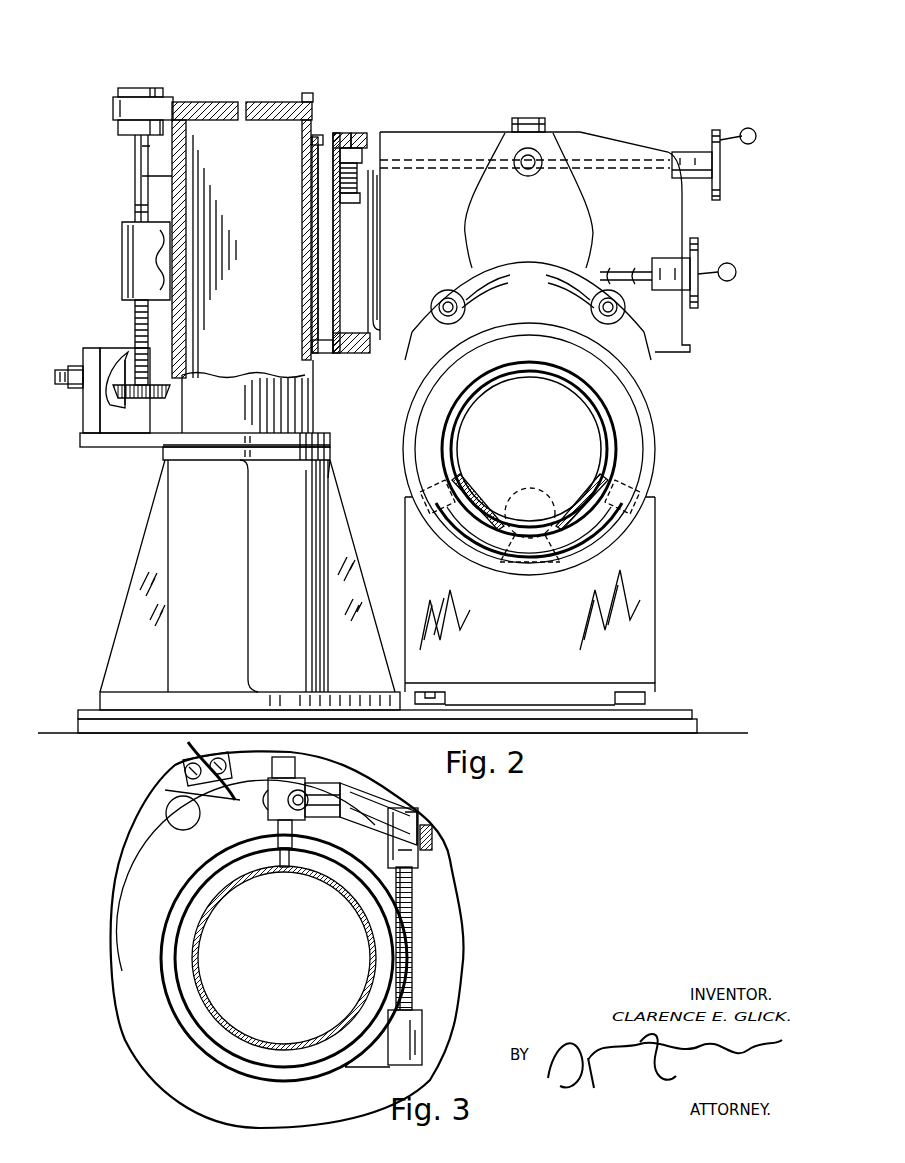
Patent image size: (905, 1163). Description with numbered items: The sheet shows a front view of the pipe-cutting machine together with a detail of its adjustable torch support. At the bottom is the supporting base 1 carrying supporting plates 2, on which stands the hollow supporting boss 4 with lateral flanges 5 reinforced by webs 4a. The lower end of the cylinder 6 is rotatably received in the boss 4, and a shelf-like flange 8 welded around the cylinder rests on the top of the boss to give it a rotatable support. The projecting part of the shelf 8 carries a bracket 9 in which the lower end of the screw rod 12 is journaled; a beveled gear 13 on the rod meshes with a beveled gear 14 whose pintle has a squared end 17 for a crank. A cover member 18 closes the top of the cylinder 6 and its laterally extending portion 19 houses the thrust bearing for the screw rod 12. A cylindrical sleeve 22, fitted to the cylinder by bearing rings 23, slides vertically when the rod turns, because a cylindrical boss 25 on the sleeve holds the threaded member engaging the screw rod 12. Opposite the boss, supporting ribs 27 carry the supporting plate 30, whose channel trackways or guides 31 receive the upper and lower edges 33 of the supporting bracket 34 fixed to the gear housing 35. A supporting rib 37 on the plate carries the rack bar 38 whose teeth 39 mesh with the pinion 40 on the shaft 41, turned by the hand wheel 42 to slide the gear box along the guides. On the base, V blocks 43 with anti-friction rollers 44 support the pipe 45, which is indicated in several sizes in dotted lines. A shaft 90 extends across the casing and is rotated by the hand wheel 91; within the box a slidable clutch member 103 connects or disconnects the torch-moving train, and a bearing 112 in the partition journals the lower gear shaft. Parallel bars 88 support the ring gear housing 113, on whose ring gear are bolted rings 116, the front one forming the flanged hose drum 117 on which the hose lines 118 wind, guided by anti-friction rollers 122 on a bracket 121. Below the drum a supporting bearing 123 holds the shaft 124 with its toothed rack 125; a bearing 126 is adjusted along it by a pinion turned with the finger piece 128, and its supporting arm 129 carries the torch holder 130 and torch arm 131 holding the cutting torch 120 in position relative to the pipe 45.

In FIG. 2, the supporting base 1 is at (695, 728).
In FIG. 2, the supporting plates 2 is at (85, 725).
In FIG. 2, the supporting boss 4 is at (300, 510).
In FIG. 2, the webs 4a is at (150, 540).
In FIG. 2, the lateral flanges 5 is at (135, 700).
In FIG. 2, the cylinder 6 is at (315, 417).
In FIG. 2, the shelf-like flange 8 is at (100, 442).
In FIG. 2, the bracket 9 is at (93, 358).
In FIG. 2, the screw rod 12 is at (135, 296).
In FIG. 2, the beveled gear 13 is at (138, 395).
In FIG. 2, the beveled gear 14 is at (110, 390).
In FIG. 2, the squared end 17 is at (60, 384).
In FIG. 2, the cover member 18 is at (200, 102).
In FIG. 2, the laterally extending portion 19 is at (113, 108).
In FIG. 2, the cylindrical sleeve 22 is at (142, 146).
In FIG. 2, the bearing rings 23 is at (142, 176).
In FIG. 2, the cylindrical boss 25 is at (125, 245).
In FIG. 2, the supporting ribs 27 is at (316, 130).
In FIG. 2, the supporting plate 30 is at (338, 250).
In FIG. 2, the trackways or guides 31 is at (340, 132).
In FIG. 2, the upper and lower edges 33 is at (362, 132).
In FIG. 2, the supporting bracket 34 is at (370, 278).
In FIG. 2, the gear housing 35 is at (598, 135).
In FIG. 2, the supporting rib 37 is at (356, 200).
In FIG. 2, the rack bar 38 is at (357, 180).
In FIG. 2, the teeth 39 is at (360, 160).
In FIG. 2, the pinion 40 is at (357, 152).
In FIG. 2, the shaft 41 is at (432, 138).
In FIG. 2, the hand wheel 42 is at (750, 128).
In FIG. 2, the V blocks 43 is at (640, 560).
In FIG. 2, the anti-friction rollers 44 is at (600, 490).
In FIG. 2, the pipe 45 is at (606, 440).
In FIG. 3, the pipe 45 is at (196, 950).
In FIG. 2, the parallel bars 88 is at (605, 308).
In FIG. 2, the shaft 90 is at (612, 270).
In FIG. 2, the hand wheel 91 is at (718, 268).
In FIG. 2, the slidable clutch member 103 is at (536, 158).
In FIG. 2, the bearing 112 is at (642, 352).
In FIG. 2, the ring gear housing 113 is at (641, 392).
In FIG. 3, the rings 116 is at (378, 890).
In FIG. 2, the flanged hose drum 117 is at (618, 410).
In FIG. 3, the flanged hose drum 117 is at (420, 903).
In FIG. 3, the hose lines 118 is at (185, 745).
In FIG. 3, the cutting torch 120 is at (290, 866).
In FIG. 3, the bracket 121 is at (166, 800).
In FIG. 3, the anti-friction rollers 122 is at (185, 772).
In FIG. 3, the supporting bearing 123 is at (410, 1037).
In FIG. 3, the shaft 124 is at (410, 925).
In FIG. 3, the toothed rack 125 is at (408, 963).
In FIG. 3, the bearing 126 is at (418, 818).
In FIG. 3, the finger piece 128 is at (433, 835).
In FIG. 3, the supporting arm 129 is at (362, 802).
In FIG. 3, the torch holder 130 is at (306, 795).
In FIG. 3, the torch arm 131 is at (282, 778).